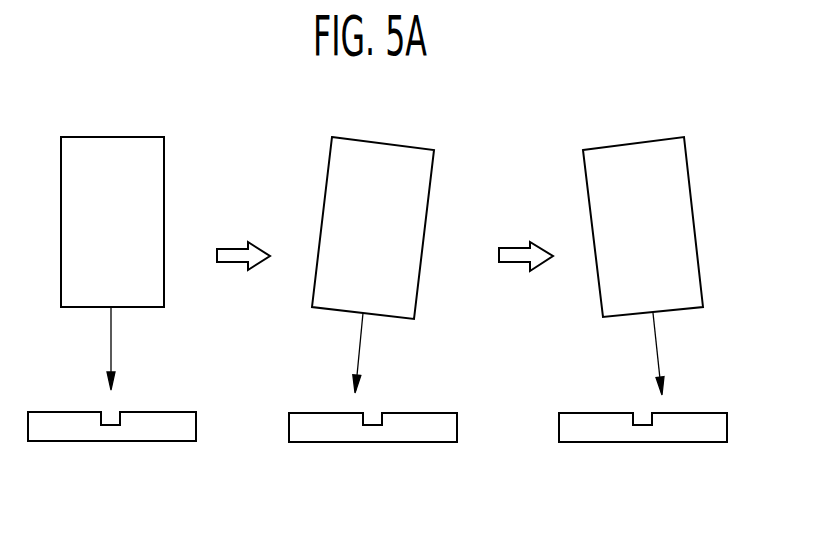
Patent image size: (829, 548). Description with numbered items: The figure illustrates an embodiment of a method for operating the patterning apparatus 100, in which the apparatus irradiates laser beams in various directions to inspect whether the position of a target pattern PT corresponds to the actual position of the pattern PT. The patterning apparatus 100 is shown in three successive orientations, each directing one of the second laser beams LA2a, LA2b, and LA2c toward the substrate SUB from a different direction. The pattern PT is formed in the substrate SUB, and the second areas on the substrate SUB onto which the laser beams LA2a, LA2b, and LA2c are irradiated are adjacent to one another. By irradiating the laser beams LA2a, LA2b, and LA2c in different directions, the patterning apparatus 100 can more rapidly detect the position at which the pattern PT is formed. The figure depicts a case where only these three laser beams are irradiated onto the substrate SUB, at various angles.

The patterning apparatus 100 is at (164, 198).
The (2-1)th laser beam LA2a is at (131, 348).
The (2-2)th laser beam LA2b is at (380, 353).
The (2-3)th laser beam LA2c is at (678, 354).
The pattern PT is at (112, 425).
The substrate SUB is at (168, 441).